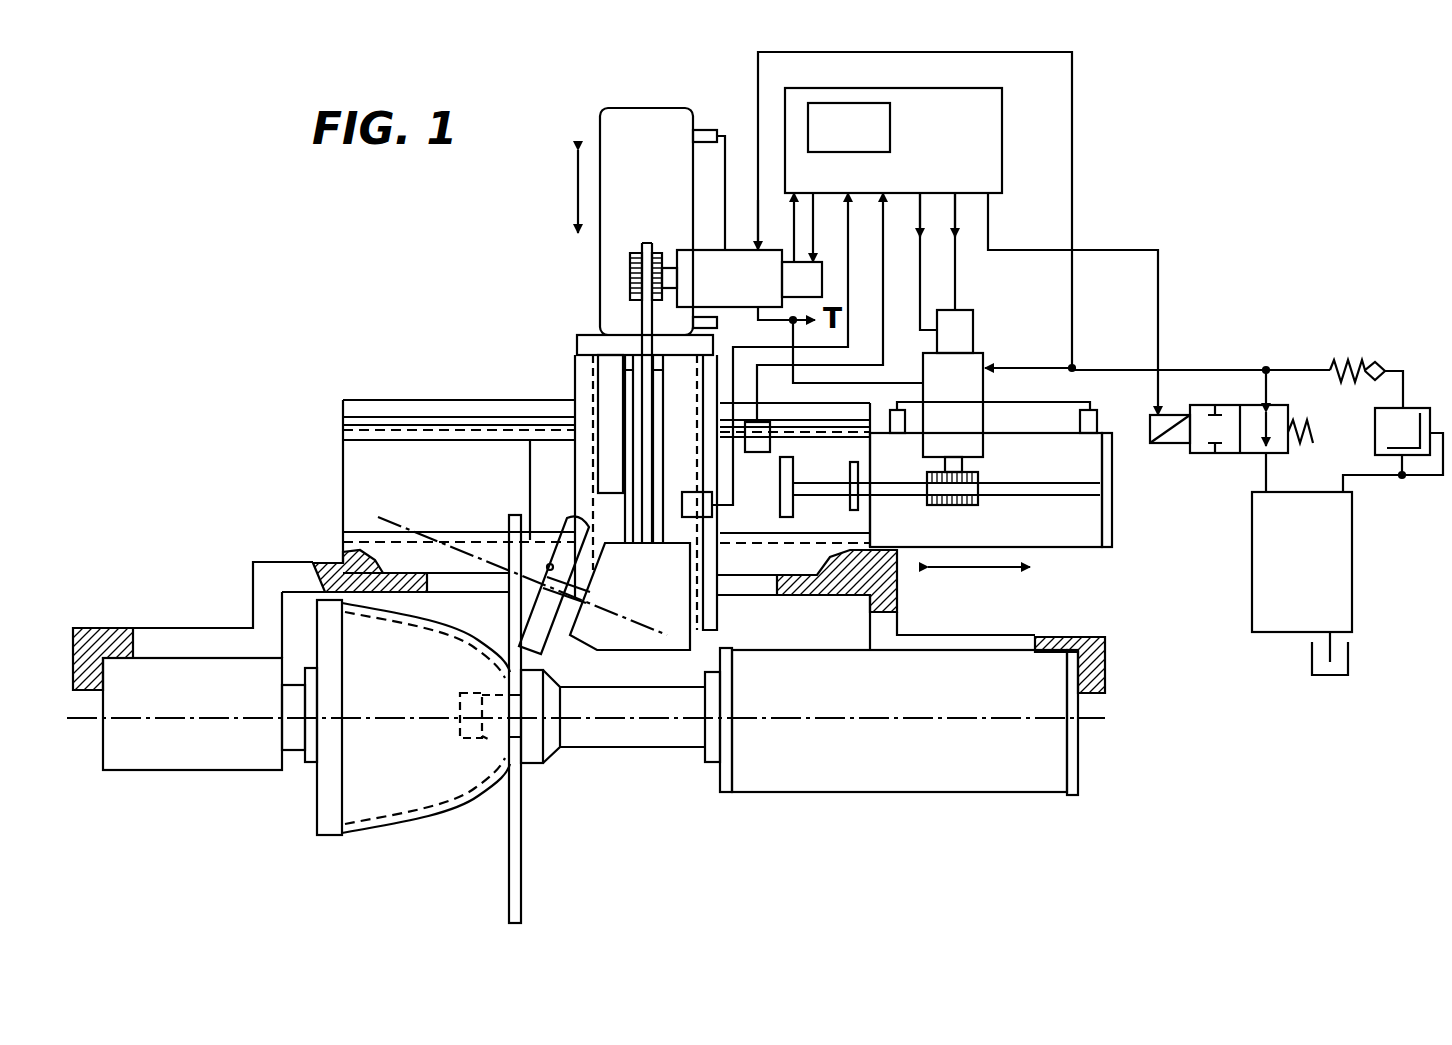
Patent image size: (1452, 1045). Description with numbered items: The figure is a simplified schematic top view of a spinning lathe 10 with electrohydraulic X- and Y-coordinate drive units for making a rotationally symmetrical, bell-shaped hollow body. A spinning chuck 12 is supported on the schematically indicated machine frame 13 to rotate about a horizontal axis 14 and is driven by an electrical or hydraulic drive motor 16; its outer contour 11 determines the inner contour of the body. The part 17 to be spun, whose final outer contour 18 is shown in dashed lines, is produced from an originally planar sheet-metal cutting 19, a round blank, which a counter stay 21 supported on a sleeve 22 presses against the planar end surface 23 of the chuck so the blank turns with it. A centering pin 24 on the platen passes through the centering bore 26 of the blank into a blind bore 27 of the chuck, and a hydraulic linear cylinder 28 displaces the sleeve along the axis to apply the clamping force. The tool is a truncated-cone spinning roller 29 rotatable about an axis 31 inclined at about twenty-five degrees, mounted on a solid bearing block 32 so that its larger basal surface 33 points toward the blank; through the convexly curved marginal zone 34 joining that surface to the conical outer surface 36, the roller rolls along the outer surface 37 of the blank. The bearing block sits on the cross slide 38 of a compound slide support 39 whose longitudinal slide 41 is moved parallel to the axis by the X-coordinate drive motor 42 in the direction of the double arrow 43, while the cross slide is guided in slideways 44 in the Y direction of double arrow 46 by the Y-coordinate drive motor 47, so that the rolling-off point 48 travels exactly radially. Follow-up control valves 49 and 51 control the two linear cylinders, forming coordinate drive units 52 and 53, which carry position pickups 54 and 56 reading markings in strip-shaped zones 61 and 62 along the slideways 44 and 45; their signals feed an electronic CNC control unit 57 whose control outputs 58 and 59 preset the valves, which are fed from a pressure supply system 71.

The spinning lathe 10 is at (470, 285).
The outer contour 11 is at (450, 808).
The spinning chuck 12 is at (340, 783).
The machine frame 13 is at (280, 560).
The horizontal axis 14 is at (83, 720).
The drive motor 16 is at (152, 755).
The part to be subjected to spinning 17 is at (483, 800).
The final outer contour 18 is at (412, 812).
The sheet-metal cutting 19 is at (521, 853).
The counter stay 21 is at (542, 742).
The sleeve 22 is at (672, 742).
The planar end surface 23 is at (508, 678).
The centering pin 24 is at (490, 740).
The centering bore 26 is at (512, 745).
The blind bore 27 is at (460, 697).
The hydraulic linear cylinder 28 is at (1030, 795).
The spinning roller 29 is at (560, 530).
The axis 31 is at (385, 517).
The bearing block 32 is at (625, 640).
The basal surface 33 is at (608, 585).
The convexly curved marginal zone 34 is at (575, 527).
The conical outer surface 36 is at (545, 640).
The outer surface 37 is at (521, 892).
The cross slide 38 is at (700, 645).
The compound slide support 39 is at (448, 395).
The longitudinal slide 41 is at (530, 460).
The X-coordinate drive motor 42 is at (1077, 540).
The double arrow 43 is at (997, 570).
The slideways 44 is at (577, 345).
The slideways 45 is at (383, 430).
The double arrow 46 is at (577, 205).
The Y-coordinate drive motor 47 is at (605, 145).
The rolling-off point 48 is at (520, 632).
The follow-up control valve 49 is at (970, 365).
The follow-up control valve 51 is at (742, 258).
The X-coordinate drive unit 52 is at (1115, 520).
The Y-coordinate drive unit 53 is at (662, 103).
The position pickup 54 is at (753, 443).
The position pickup 56 is at (707, 510).
The electronic CNC control unit 57 is at (992, 127).
The control output 58 is at (923, 207).
The control output 59 is at (813, 192).
The strip-shaped zone 61 is at (710, 373).
The strip-shaped zone 62 is at (548, 425).
The pressure supply system 71 is at (1343, 605).